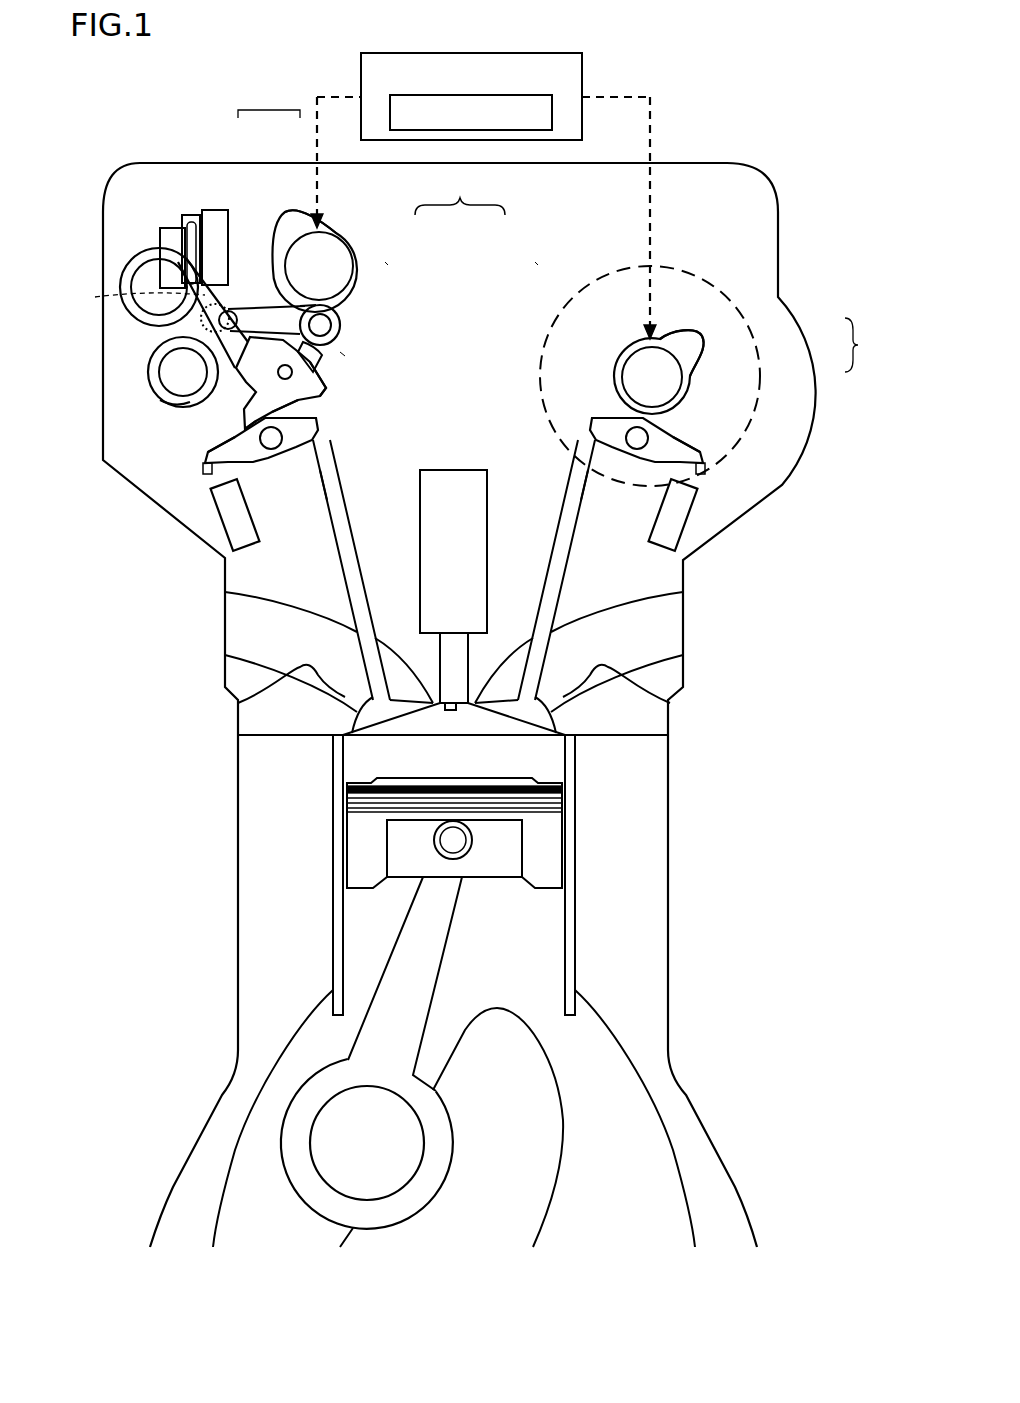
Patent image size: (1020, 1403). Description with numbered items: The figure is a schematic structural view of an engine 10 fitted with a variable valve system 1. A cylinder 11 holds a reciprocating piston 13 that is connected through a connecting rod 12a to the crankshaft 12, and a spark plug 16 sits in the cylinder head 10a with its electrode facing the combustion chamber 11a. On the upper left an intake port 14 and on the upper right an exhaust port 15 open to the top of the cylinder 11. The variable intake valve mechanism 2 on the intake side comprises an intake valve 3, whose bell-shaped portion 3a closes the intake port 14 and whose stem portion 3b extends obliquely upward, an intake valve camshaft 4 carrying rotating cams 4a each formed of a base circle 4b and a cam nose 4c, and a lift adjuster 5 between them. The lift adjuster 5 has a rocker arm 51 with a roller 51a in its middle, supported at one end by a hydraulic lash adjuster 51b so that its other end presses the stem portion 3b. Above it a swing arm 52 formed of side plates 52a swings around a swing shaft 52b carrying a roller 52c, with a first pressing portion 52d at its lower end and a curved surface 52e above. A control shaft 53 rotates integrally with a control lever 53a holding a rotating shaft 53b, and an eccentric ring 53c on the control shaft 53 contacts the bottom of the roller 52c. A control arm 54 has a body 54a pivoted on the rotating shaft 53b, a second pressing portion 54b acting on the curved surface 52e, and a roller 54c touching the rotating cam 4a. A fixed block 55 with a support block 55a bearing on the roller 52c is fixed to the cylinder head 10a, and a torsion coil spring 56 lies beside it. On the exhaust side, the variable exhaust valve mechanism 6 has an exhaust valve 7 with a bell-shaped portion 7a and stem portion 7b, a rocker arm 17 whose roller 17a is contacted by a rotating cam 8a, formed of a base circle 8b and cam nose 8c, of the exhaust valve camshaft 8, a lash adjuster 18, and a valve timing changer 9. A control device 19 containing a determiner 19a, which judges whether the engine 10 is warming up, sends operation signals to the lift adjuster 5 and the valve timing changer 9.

The variable valve system 1 is at (460, 194).
The variable intake valve mechanism 2 is at (385, 265).
The intake valve 3 is at (348, 500).
The bell-shaped portion 3a is at (385, 738).
The stem portion 3b is at (343, 545).
The intake valve camshaft 4 is at (330, 225).
The rotating cam 4a is at (292, 210).
The base circle 4b is at (300, 238).
The cam nose 4c is at (326, 232).
The lift adjuster 5 is at (345, 352).
The variable exhaust valve mechanism 6 is at (537, 265).
The exhaust valve 7 is at (565, 590).
The bell-shaped portion 7a is at (527, 763).
The stem portion 7b is at (565, 550).
The exhaust valve camshaft 8 is at (692, 330).
The rotating cam 8a is at (867, 345).
The base circle 8b is at (690, 392).
The cam nose 8c is at (685, 348).
The valve timing changer 9 is at (690, 275).
The engine 10 is at (770, 108).
The cylinder head 10a is at (778, 240).
The cylinder 11 is at (578, 877).
The combustion chamber 11a is at (575, 793).
The crankshaft 12 is at (424, 1143).
The connecting rod 12a is at (425, 940).
The piston 13 is at (545, 838).
The intake port 14 is at (250, 693).
The exhaust port 15 is at (658, 696).
The spark plug 16 is at (440, 660).
The rocker arm 17 is at (690, 434).
The roller 17a is at (660, 418).
The lash adjuster 18 is at (690, 520).
The control device 19 is at (583, 70).
The determiner 19a is at (553, 113).
The rocker arm 51 is at (205, 468).
The roller 51a is at (208, 453).
The hydraulic lash adjuster 51b is at (222, 500).
The swing arm 52 is at (240, 410).
The side plate 52a is at (330, 392).
The swing shaft 52b is at (230, 310).
The roller 52c is at (232, 300).
The first pressing portion 52d is at (320, 428).
The curved surface 52e is at (330, 372).
The control shaft 53 is at (146, 374).
The control lever 53a is at (205, 325).
The rotating shaft 53b is at (123, 295).
The eccentric ring 53c is at (178, 398).
The control arm 54 is at (340, 292).
The body 54a is at (342, 323).
The second pressing portion 54b is at (340, 400).
The roller 54c is at (352, 340).
The fixed block 55 is at (186, 214).
The support block 55a is at (165, 225).
The torsion coil spring 56 is at (120, 290).